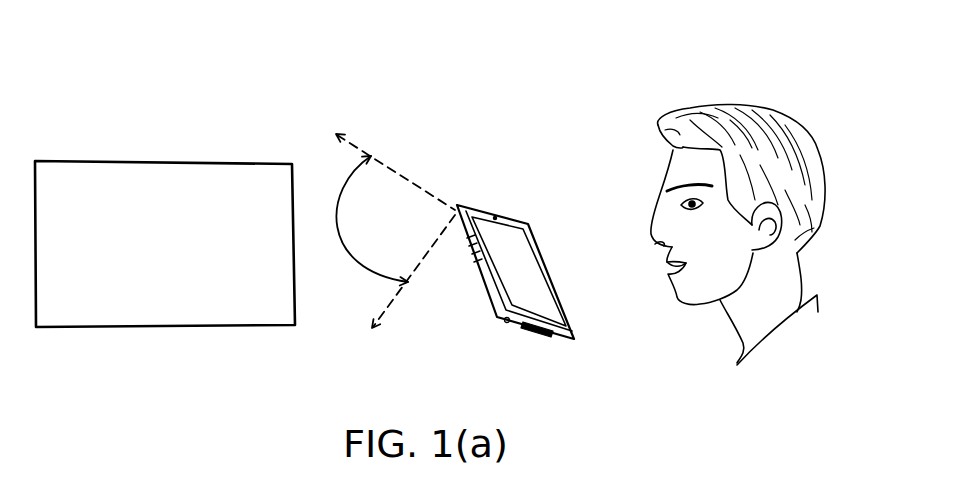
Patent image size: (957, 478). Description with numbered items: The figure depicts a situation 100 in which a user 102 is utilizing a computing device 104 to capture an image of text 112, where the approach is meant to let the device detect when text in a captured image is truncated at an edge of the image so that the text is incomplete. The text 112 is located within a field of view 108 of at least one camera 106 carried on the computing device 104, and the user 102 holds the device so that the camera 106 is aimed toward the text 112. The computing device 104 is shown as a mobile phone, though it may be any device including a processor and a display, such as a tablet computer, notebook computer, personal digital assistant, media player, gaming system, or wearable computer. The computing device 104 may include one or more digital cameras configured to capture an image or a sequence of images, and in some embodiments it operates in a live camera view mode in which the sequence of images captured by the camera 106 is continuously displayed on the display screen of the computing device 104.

The situation 100 is at (226, 107).
The user 102 is at (655, 157).
The computing device 104 is at (505, 326).
The camera 106 is at (455, 203).
The field of view 108 is at (355, 221).
The text 112 is at (186, 349).